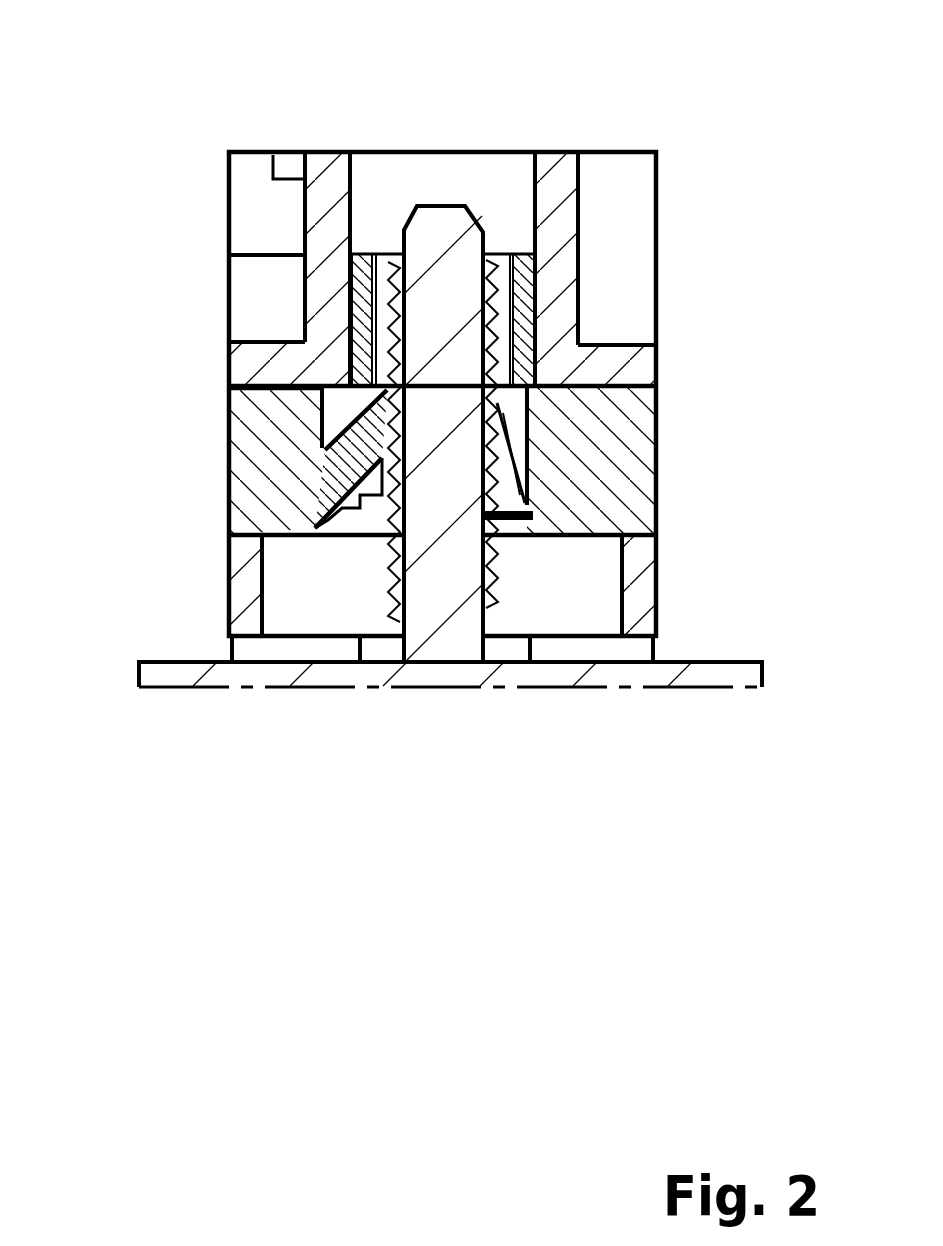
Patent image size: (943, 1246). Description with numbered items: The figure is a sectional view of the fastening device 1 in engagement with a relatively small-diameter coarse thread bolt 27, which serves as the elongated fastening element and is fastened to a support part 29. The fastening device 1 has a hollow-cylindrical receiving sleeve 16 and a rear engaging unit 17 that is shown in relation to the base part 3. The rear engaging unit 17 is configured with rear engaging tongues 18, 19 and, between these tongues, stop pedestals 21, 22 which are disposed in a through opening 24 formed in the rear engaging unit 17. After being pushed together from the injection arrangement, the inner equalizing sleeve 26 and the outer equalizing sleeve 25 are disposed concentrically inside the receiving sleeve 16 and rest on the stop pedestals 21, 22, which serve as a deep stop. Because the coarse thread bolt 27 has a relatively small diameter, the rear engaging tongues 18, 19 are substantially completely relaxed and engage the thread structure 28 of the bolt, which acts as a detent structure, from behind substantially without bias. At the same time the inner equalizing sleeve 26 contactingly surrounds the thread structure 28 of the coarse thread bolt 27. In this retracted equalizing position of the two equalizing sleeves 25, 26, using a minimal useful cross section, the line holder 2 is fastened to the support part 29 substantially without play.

The fastening device 1 is at (418, 138).
The line holder 2 is at (167, 130).
The base part 3 is at (642, 557).
The receiving sleeve 16 is at (560, 228).
The rear engaging unit 17 is at (267, 488).
The rear engaging tongue 18 is at (358, 437).
The rear engaging tongue 19 is at (528, 417).
The stop pedestal 21 is at (343, 410).
The stop pedestal 22 is at (510, 398).
The through opening 24 is at (366, 480).
The outer equalizing sleeve 25 is at (537, 293).
The inner equalizing sleeve 26 is at (513, 320).
The coarse thread bolt 27 is at (430, 300).
The thread structure 28 is at (493, 268).
The support part 29 is at (233, 664).